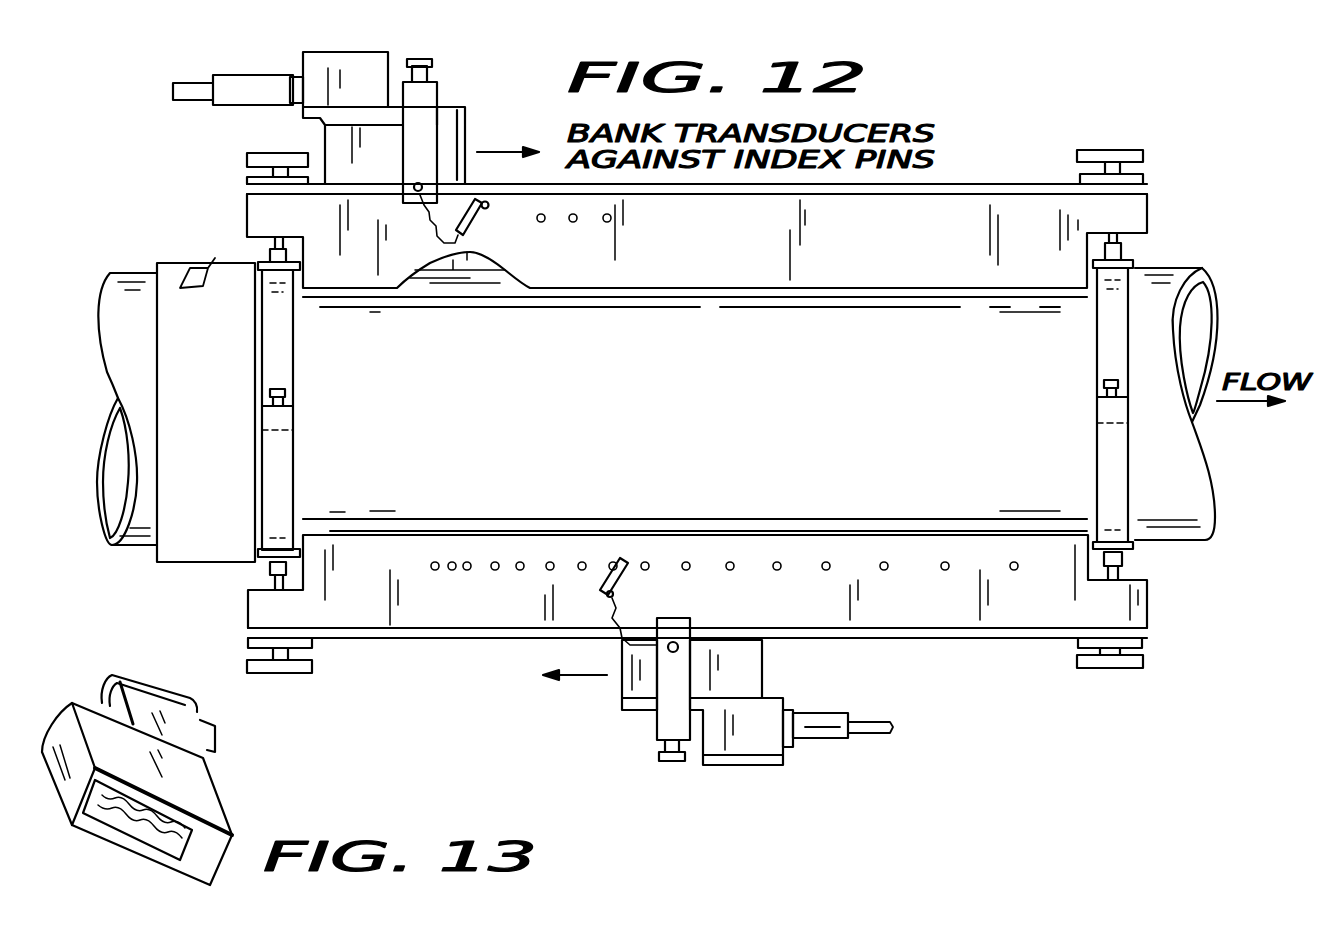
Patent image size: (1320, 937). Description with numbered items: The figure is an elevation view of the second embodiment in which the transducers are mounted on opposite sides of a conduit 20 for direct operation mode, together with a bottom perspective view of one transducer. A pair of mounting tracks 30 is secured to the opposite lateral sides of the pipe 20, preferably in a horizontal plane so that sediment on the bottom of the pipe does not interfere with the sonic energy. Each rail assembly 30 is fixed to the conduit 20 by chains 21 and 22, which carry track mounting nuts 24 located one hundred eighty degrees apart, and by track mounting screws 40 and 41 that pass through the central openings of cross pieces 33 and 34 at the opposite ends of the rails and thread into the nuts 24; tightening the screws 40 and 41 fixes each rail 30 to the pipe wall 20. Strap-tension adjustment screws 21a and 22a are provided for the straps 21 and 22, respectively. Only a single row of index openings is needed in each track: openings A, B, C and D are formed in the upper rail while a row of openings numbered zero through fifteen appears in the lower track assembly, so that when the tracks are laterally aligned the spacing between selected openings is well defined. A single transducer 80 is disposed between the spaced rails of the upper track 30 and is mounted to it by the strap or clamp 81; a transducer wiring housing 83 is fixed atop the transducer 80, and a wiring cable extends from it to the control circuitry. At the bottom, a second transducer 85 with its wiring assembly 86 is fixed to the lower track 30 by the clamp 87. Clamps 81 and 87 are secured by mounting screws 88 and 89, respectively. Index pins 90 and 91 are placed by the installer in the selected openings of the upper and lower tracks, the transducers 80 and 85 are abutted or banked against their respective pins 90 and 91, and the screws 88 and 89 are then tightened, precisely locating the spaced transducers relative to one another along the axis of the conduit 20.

In FIG. 12, the conduit 20 is at (708, 424).
In FIG. 12, the chain 21 is at (290, 483).
In FIG. 12, the strap-tension adjustment screw 21a is at (288, 393).
In FIG. 12, the chain 22 is at (1090, 476).
In FIG. 12, the strap-tension adjustment screw 22a is at (1097, 385).
In FIG. 12, the track mounting nut 24 is at (270, 255).
In FIG. 12, the mounting track 30 is at (1005, 160).
In FIG. 12, the cross piece 33 is at (247, 182).
In FIG. 12, the cross piece 34 is at (1147, 176).
In FIG. 12, the track mounting screw 40 is at (247, 160).
In FIG. 12, the track mounting screw 41 is at (1120, 150).
In FIG. 12, the transducer 80 is at (345, 142).
In FIG. 13, the transducer 80 is at (200, 793).
In FIG. 12, the clamp 81 is at (430, 140).
In FIG. 12, the transducer wiring housing 83 is at (328, 70).
In FIG. 13, the transducer wiring housing 83 is at (147, 660).
In FIG. 12, the second transducer 85 is at (752, 667).
In FIG. 12, the wiring assembly 86 is at (757, 743).
In FIG. 12, the clamp 87 is at (660, 725).
In FIG. 12, the mounting screw 88 is at (428, 64).
In FIG. 12, the mounting screw 89 is at (665, 763).
In FIG. 12, the index pin 90 is at (474, 222).
In FIG. 12, the index pin 91 is at (617, 570).